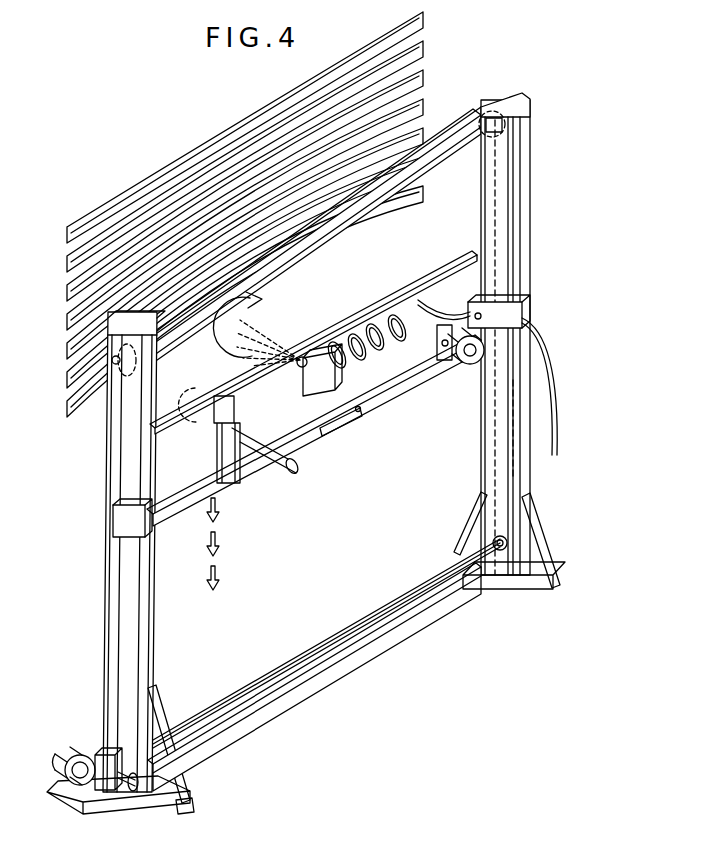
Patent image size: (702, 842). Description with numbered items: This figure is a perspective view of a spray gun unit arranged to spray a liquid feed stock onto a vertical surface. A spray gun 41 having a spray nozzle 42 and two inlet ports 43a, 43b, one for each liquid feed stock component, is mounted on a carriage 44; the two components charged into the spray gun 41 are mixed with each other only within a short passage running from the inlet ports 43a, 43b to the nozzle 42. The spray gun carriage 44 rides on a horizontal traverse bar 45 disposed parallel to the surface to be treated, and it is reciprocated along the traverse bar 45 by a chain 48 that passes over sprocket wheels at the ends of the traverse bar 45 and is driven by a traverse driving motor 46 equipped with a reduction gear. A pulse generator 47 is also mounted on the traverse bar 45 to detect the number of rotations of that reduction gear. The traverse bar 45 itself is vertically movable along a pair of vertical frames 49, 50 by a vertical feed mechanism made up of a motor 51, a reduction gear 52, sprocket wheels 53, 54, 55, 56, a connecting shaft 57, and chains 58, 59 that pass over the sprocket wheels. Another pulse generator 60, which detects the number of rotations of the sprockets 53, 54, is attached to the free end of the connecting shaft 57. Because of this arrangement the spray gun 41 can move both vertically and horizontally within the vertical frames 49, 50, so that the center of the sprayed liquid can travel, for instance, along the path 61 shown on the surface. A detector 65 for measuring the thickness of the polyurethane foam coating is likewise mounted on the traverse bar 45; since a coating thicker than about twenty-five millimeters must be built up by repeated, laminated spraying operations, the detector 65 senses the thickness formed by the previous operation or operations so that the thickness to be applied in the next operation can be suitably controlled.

The spray gun 41 is at (318, 388).
The spray nozzle 42 is at (298, 376).
The inlet port 43a is at (322, 350).
The inlet port 43b is at (350, 340).
The carriage 44 is at (362, 408).
The horizontal traverse bar 45 is at (190, 498).
The traverse driving motor 46 is at (474, 360).
The pulse generator 47 is at (474, 316).
The chain 48 is at (416, 372).
The vertical frame 49 is at (526, 224).
The vertical frame 50 is at (116, 558).
The motor 51 is at (76, 752).
The reduction gear 52 is at (106, 750).
The sprocket wheel 53 is at (134, 800).
The sprocket wheel 54 is at (116, 366).
The sprocket wheel 55 is at (486, 120).
The sprocket wheel 56 is at (502, 552).
The connecting shaft 57 is at (322, 641).
The chain 58 is at (158, 588).
The chain 59 is at (494, 430).
The pulse generator 60 is at (543, 531).
The path 61 is at (230, 133).
The detector 65 is at (262, 458).